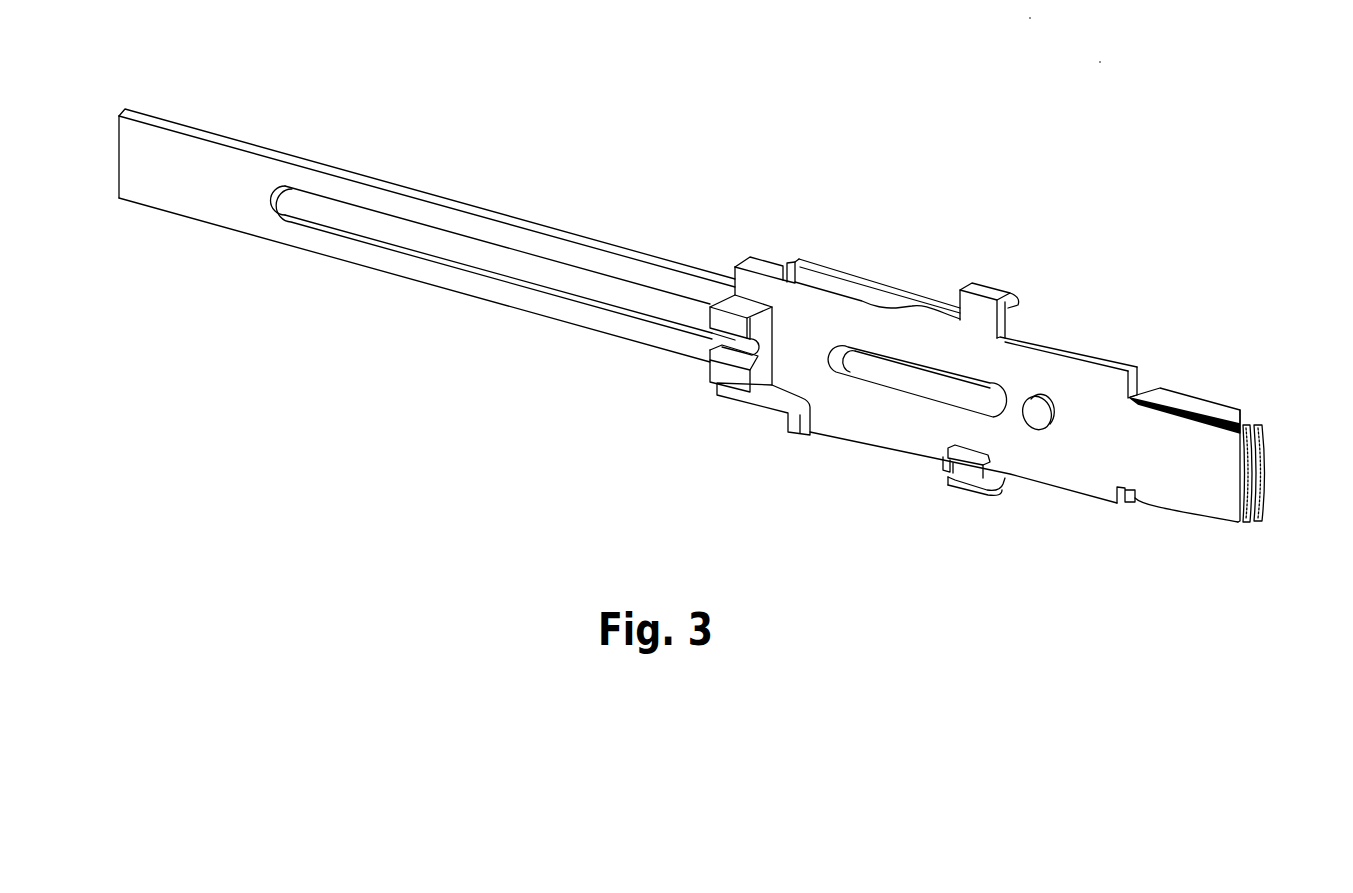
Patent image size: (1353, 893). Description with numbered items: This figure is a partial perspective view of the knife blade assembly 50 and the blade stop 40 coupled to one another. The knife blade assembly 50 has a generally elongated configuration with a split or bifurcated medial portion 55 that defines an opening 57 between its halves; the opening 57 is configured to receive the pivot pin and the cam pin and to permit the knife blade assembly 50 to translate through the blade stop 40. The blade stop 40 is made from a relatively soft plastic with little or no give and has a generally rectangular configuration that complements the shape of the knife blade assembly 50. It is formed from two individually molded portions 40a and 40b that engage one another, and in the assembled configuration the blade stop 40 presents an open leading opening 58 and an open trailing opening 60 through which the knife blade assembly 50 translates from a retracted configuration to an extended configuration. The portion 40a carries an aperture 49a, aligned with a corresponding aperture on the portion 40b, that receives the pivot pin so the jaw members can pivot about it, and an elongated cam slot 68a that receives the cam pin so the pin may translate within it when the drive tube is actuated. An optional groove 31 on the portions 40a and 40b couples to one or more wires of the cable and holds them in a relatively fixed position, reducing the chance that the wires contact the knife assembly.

The knife blade assembly 50 is at (338, 114).
The bifurcated medial portion 55 is at (438, 186).
The opening 57 is at (556, 282).
The trailing opening 60 is at (753, 258).
The groove 31 is at (706, 343).
The blade stop 40 is at (1104, 318).
The elongated cam slot 68a is at (900, 393).
The aperture 49a is at (1020, 425).
The portion 40a is at (1198, 493).
The portion 40b is at (1250, 423).
The leading opening 58 is at (1270, 479).